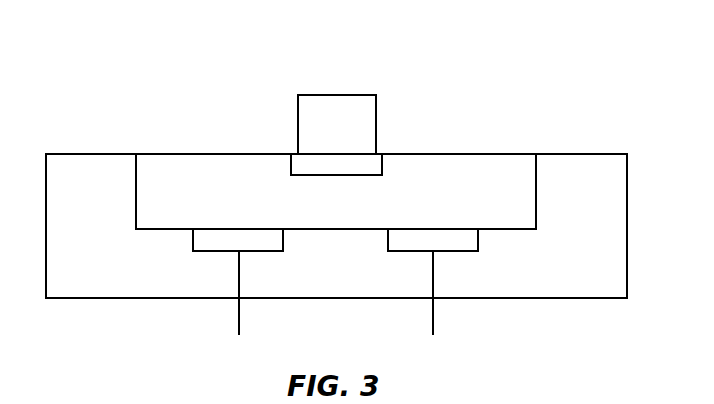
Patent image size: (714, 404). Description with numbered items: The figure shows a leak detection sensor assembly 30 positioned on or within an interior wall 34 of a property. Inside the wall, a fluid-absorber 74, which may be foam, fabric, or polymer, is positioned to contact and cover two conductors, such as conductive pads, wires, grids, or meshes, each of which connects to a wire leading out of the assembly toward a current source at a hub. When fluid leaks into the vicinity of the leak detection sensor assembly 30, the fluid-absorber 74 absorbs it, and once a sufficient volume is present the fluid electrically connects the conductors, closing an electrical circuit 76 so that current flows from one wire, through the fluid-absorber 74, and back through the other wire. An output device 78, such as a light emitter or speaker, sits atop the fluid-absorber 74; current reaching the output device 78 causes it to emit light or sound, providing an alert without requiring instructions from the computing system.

The leak detection sensor assembly 30 is at (575, 63).
The interior wall 34 is at (627, 233).
The fluid-absorber 74 is at (536, 186).
The electrical circuit 76 is at (400, 101).
The output device 78 is at (336, 95).